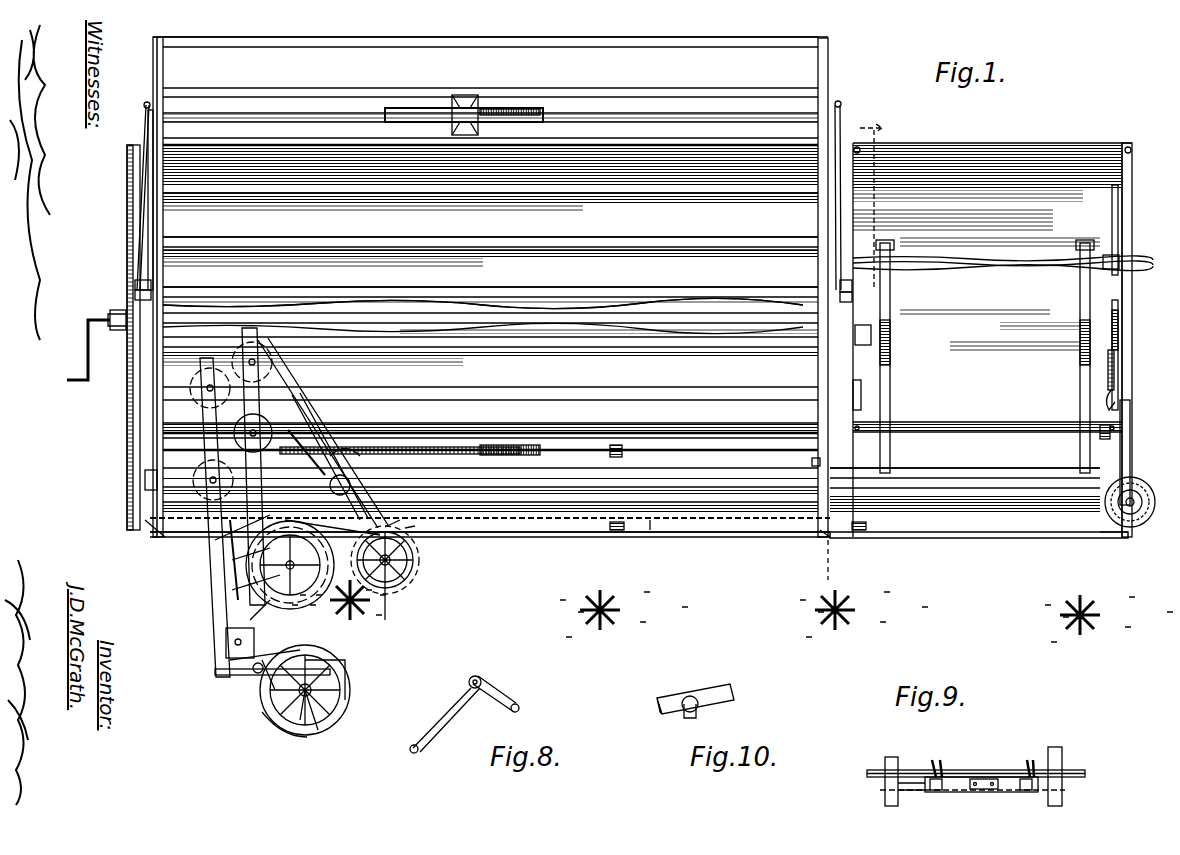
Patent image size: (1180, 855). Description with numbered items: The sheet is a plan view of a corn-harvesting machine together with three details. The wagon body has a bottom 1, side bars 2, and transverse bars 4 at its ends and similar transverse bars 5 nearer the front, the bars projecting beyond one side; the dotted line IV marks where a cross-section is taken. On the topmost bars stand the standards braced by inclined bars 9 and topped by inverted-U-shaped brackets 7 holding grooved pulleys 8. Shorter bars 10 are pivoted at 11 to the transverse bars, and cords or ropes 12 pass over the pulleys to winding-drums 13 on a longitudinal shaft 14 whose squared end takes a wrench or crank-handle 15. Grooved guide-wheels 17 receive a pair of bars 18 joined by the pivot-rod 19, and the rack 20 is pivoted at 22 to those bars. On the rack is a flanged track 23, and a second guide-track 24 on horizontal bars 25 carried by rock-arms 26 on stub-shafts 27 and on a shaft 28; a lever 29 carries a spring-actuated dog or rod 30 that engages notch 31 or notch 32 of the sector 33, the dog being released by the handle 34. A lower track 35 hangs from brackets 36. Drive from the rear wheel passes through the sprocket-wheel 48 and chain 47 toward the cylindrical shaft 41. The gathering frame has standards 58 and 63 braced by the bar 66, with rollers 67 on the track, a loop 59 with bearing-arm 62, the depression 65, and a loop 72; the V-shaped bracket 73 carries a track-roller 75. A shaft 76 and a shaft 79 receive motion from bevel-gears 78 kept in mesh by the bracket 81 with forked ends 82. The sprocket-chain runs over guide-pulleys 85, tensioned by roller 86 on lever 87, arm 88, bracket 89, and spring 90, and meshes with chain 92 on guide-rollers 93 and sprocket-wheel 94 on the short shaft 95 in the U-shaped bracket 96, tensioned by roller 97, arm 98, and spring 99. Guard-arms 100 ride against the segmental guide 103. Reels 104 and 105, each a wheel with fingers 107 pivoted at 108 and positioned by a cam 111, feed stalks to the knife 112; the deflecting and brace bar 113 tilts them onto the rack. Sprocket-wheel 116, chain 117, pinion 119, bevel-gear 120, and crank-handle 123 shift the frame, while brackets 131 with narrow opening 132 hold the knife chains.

In FIG. 1, the bottom 1 is at (490, 264).
In FIG. 1, the side bars 2 is at (645, 150).
In FIG. 1, the transverse bars 4 is at (128, 415).
In FIG. 1, the transverse bars 5 is at (859, 395).
In FIG. 1, the inverted-U-shaped brackets 7 is at (135, 293).
In FIG. 1, the grooved pulleys 8 is at (135, 283).
In FIG. 1, the inclined bars 9 is at (130, 188).
In FIG. 1, the bars 10 is at (160, 207).
In FIG. 1, the pivot 11 is at (165, 285).
In FIG. 1, the cords or ropes 12 is at (140, 241).
In FIG. 1, the winding-drums 13 is at (110, 316).
In FIG. 1, the longitudinal shaft 14 is at (527, 300).
In FIG. 1, the wrench or crank-handle 15 is at (88, 360).
In FIG. 1, the grooved guide-wheels 17 is at (812, 462).
In FIG. 1, the bars 18 is at (165, 232).
In FIG. 1, the pivot-rod 19 is at (494, 115).
In FIG. 1, the rack 20 is at (490, 28).
In FIG. 1, the pivot 22 is at (818, 535).
In FIG. 1, the track 23 is at (490, 505).
In FIG. 1, the guide-track 24 is at (965, 504).
In FIG. 1, the transverse horizontal bars 25 is at (890, 452).
In FIG. 1, the rock-arms 26 is at (890, 290).
In FIG. 1, the stub-shafts 27 is at (890, 362).
In FIG. 1, the shaft 28 is at (1003, 261).
In FIG. 1, the lever 29 is at (1118, 330).
In FIG. 1, the rod 30 is at (1118, 354).
In FIG. 1, the notch 31 is at (1118, 298).
In FIG. 1, the notch 32 is at (1120, 255).
In FIG. 1, the sector 33 is at (1112, 213).
In FIG. 1, the handle 34 is at (1115, 405).
In FIG. 1, the track 35 is at (718, 537).
In FIG. 1, the brackets 36 is at (622, 451).
In FIG. 9, the cylindrical shaft 41 is at (1075, 770).
In FIG. 1, the chain 47 is at (415, 445).
In FIG. 1, the sprocket-wheel 48 is at (540, 452).
In FIG. 9, the vertical standard 58 is at (1055, 750).
In FIG. 1, the loop 59 is at (272, 365).
In FIG. 1, the bearing-arm 62 is at (252, 565).
In FIG. 9, the standard 63 is at (885, 760).
In FIG. 1, the depression 65 is at (415, 526).
In FIG. 10, the bar 66 is at (734, 692).
In FIG. 9, the bar 66 is at (915, 790).
In FIG. 1, the grooved wheels or rollers 67 is at (215, 565).
In FIG. 1, the loop 72 is at (200, 366).
In FIG. 8, the V-shaped bracket 73 is at (464, 714).
In FIG. 1, the track-roller 75 is at (348, 478).
In FIG. 1, the shaft 76 is at (253, 613).
In FIG. 1, the bevel-gear 78 is at (390, 524).
In FIG. 9, the bevel-gear 78 is at (936, 760).
In FIG. 1, the shaft 79 is at (405, 580).
In FIG. 9, the bracket 81 is at (984, 790).
In FIG. 9, the forked ends 82 is at (935, 792).
In FIG. 1, the grooved guide-pulleys 85 is at (245, 352).
In FIG. 1, the tension-roller 86 is at (346, 446).
In FIG. 1, the lever 87 is at (330, 440).
In FIG. 1, the arm 88 is at (312, 435).
In FIG. 1, the bracket 89 is at (215, 525).
In FIG. 1, the retractile spring 90 is at (290, 398).
In FIG. 1, the chain 92 is at (265, 712).
In FIG. 1, the grooved guide-rollers 93 is at (195, 460).
In FIG. 1, the sprocket-wheel 94 is at (350, 694).
In FIG. 1, the short shaft 95 is at (300, 712).
In FIG. 1, the U-shaped bracket 96 is at (216, 675).
In FIG. 1, the tension-roller 97 is at (230, 660).
In FIG. 1, the arm 98 is at (255, 672).
In FIG. 1, the retractile spring 99 is at (226, 636).
In FIG. 1, the guard-arms 100 is at (232, 553).
In FIG. 1, the segmental guide 103 is at (250, 580).
In FIG. 1, the reel 104 is at (408, 558).
In FIG. 1, the reel 105 is at (318, 725).
In FIG. 1, the fingers 107 is at (426, 548).
In FIG. 1, the pivot 108 is at (409, 604).
In FIG. 1, the cam 111 is at (348, 660).
In FIG. 1, the knife 112 is at (256, 684).
In FIG. 1, the deflecting and brace bar 113 is at (225, 600).
In FIG. 1, the sprocket-wheel 116 is at (1145, 485).
In FIG. 1, the chain 117 is at (655, 528).
In FIG. 1, the pinion 119 is at (1148, 508).
In FIG. 1, the bevel-gear 120 is at (1115, 538).
In FIG. 1, the crank-handle 123 is at (1130, 425).
In FIG. 10, the brackets 131 is at (690, 696).
In FIG. 10, the narrow opening 132 is at (688, 716).
In FIG. 1, the dotted line IV is at (871, 198).